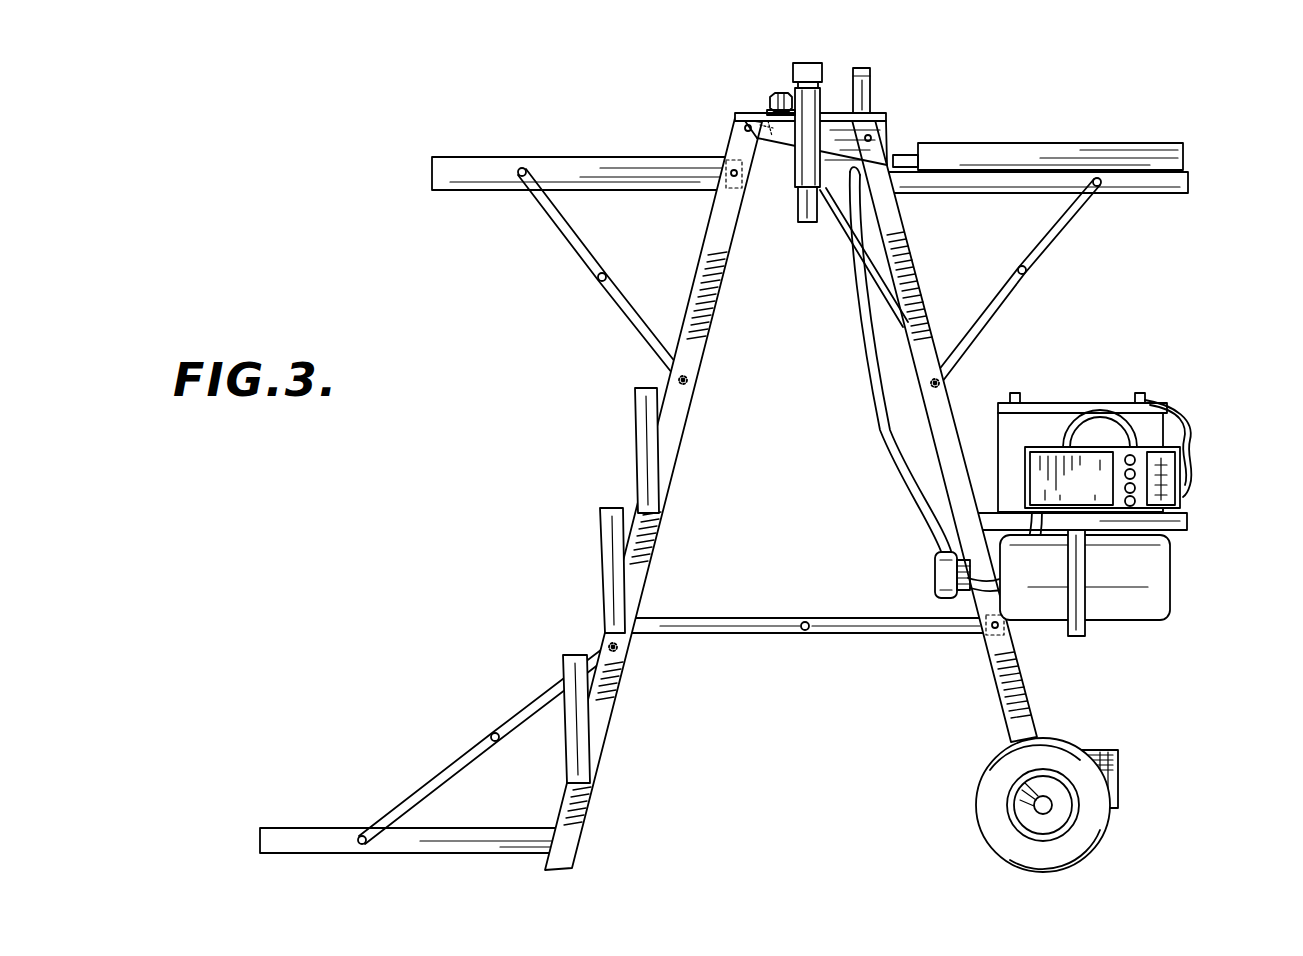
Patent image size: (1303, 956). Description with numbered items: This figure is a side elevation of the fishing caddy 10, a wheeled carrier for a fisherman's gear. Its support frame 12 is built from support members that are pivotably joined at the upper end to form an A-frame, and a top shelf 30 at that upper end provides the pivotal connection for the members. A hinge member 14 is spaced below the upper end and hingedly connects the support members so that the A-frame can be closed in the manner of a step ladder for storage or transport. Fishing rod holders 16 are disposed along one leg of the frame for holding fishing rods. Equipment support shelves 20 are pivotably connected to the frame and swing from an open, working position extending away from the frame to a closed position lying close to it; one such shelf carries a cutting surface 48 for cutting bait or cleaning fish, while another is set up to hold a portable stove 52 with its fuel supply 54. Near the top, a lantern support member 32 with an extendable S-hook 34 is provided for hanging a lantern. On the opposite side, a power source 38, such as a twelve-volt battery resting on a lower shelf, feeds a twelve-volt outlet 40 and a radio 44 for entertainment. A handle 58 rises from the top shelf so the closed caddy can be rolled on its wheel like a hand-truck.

The fishing caddy 10 is at (326, 120).
The support frame 12 is at (905, 358).
The hinge member 14 is at (880, 637).
The fishing rod holder 16 is at (630, 452).
The equipment support shelf 20 is at (466, 176).
The top shelf 30 is at (836, 116).
The lantern support member 32 is at (785, 182).
The extendable S-hook 34 is at (796, 70).
The power source 38 is at (1152, 402).
The 12-volt outlet 40 is at (770, 103).
The radio 44 is at (1172, 492).
The cutting surface 48 is at (547, 158).
The portable stove 52 is at (1140, 143).
The fuel supply 54 is at (1113, 615).
The handle 58 is at (875, 92).